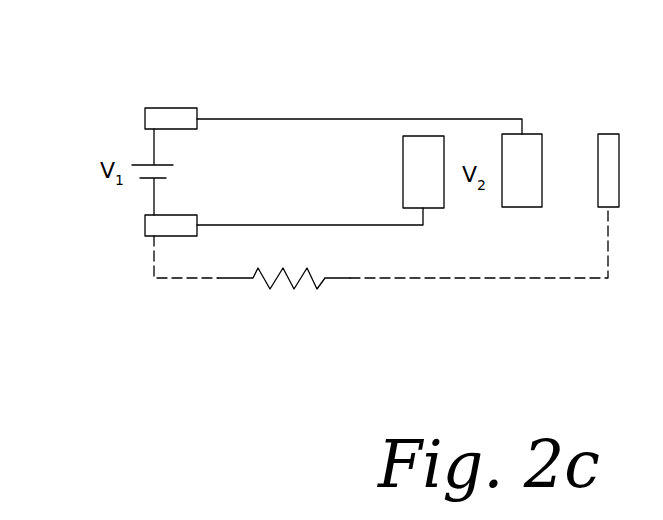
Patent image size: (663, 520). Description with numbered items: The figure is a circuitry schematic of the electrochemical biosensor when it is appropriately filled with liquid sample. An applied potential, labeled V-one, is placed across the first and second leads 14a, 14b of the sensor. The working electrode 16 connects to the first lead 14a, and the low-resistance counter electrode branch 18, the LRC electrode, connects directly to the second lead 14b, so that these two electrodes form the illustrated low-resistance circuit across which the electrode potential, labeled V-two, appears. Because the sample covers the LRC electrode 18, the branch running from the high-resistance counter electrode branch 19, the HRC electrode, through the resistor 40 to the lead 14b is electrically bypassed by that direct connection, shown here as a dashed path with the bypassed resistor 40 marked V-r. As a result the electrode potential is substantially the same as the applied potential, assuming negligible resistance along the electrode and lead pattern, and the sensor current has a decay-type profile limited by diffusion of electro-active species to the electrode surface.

The first lead 14a is at (152, 108).
The second lead 14b is at (145, 219).
The working electrode 16 is at (532, 134).
The low-resistance counter electrode branch 18 is at (435, 208).
The high-resistance counter electrode branch 19 is at (608, 134).
The resistor 40 is at (260, 302).